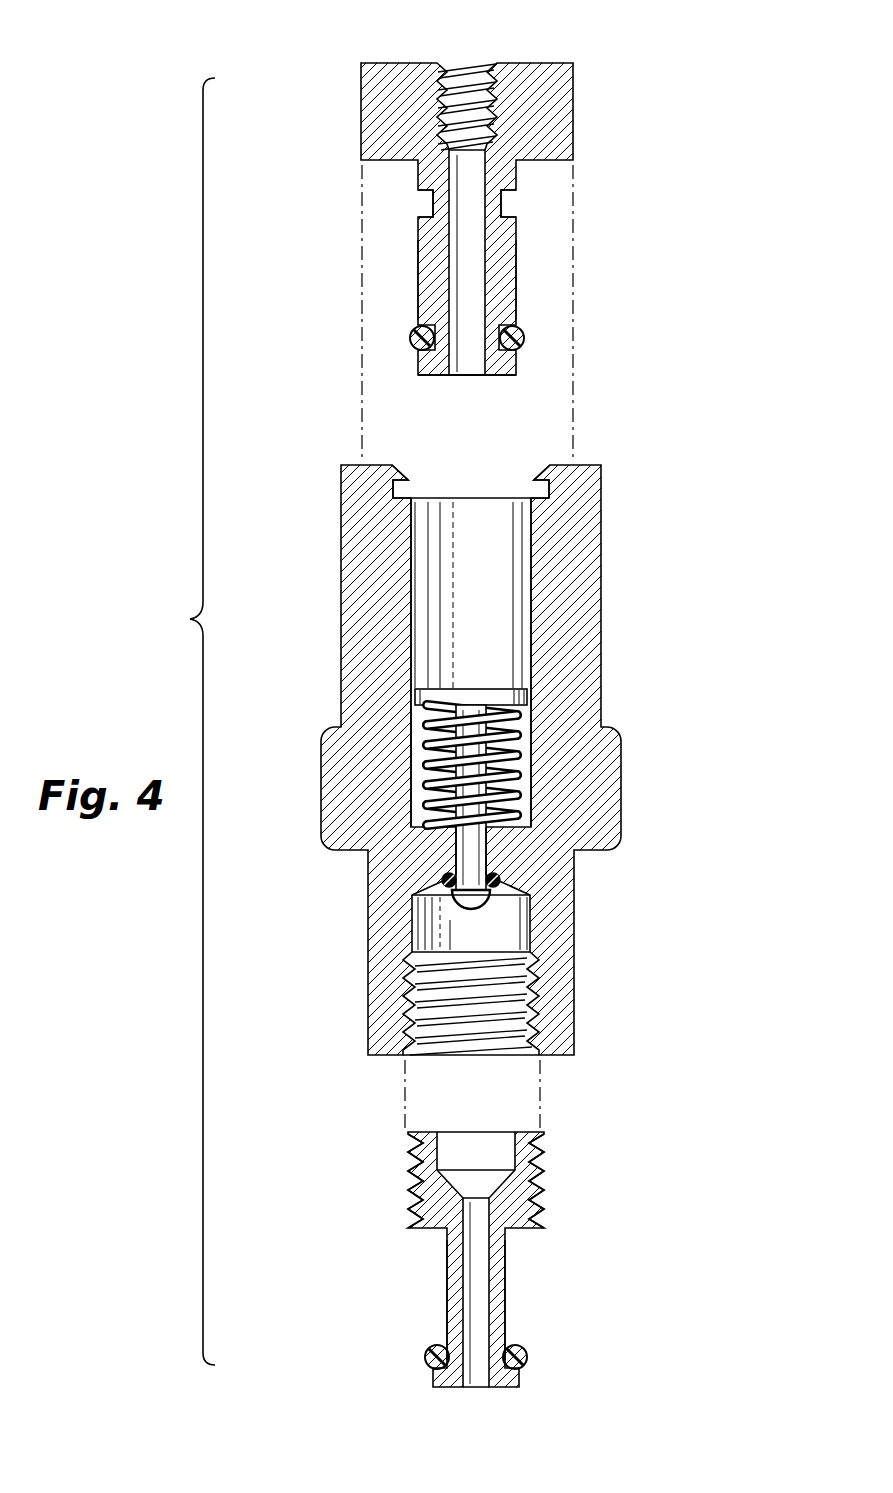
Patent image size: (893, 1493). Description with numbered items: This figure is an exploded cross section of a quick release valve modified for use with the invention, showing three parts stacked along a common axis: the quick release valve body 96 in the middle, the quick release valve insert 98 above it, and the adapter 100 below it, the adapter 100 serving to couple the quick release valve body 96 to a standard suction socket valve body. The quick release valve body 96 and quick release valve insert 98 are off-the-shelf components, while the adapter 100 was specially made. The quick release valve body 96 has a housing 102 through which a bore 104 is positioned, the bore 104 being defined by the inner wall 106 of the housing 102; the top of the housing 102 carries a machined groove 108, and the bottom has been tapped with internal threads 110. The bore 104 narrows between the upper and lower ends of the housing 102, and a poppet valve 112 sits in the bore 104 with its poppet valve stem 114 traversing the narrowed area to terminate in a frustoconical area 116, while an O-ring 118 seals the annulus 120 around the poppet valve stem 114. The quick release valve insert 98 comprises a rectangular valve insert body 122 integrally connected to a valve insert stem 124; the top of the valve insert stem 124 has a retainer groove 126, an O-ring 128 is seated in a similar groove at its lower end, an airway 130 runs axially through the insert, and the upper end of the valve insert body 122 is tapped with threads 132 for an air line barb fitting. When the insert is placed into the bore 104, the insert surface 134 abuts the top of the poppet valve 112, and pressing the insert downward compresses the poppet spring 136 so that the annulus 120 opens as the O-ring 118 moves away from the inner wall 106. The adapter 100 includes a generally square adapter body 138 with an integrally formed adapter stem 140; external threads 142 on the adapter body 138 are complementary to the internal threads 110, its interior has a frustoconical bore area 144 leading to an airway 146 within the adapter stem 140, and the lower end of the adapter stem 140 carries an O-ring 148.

The quick release valve body 96 is at (513, 757).
The quick release valve insert 98 is at (528, 228).
The adapter 100 is at (555, 1244).
The housing 102 is at (605, 760).
The bore 104 is at (495, 597).
The inner wall 106 is at (520, 540).
The machined groove 108 is at (536, 492).
The internal threads 110 is at (515, 1012).
The poppet valve 112 is at (438, 700).
The poppet valve stem 114 is at (487, 850).
The frustoconical area 116 is at (497, 935).
The O-ring 118 is at (445, 886).
The annulus 120 is at (430, 845).
The valve insert body 122 is at (535, 112).
The valve insert stem 124 is at (435, 280).
The retainer groove 126 is at (508, 205).
The O-ring 128 is at (527, 340).
The airway 130 is at (470, 345).
The threads 132 is at (483, 82).
The insert surface 134 is at (512, 370).
The poppet spring 136 is at (457, 803).
The adapter body 138 is at (545, 1165).
The adapter stem 140 is at (458, 1270).
The threads 142 is at (545, 1195).
The frustoconical bore area 144 is at (480, 1150).
The airway 146 is at (478, 1287).
The O-ring 148 is at (520, 1350).